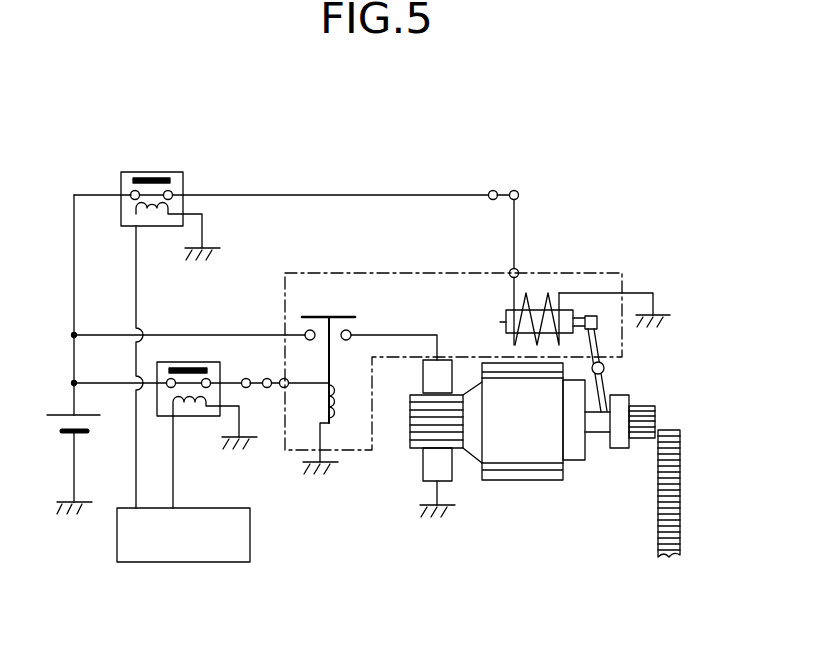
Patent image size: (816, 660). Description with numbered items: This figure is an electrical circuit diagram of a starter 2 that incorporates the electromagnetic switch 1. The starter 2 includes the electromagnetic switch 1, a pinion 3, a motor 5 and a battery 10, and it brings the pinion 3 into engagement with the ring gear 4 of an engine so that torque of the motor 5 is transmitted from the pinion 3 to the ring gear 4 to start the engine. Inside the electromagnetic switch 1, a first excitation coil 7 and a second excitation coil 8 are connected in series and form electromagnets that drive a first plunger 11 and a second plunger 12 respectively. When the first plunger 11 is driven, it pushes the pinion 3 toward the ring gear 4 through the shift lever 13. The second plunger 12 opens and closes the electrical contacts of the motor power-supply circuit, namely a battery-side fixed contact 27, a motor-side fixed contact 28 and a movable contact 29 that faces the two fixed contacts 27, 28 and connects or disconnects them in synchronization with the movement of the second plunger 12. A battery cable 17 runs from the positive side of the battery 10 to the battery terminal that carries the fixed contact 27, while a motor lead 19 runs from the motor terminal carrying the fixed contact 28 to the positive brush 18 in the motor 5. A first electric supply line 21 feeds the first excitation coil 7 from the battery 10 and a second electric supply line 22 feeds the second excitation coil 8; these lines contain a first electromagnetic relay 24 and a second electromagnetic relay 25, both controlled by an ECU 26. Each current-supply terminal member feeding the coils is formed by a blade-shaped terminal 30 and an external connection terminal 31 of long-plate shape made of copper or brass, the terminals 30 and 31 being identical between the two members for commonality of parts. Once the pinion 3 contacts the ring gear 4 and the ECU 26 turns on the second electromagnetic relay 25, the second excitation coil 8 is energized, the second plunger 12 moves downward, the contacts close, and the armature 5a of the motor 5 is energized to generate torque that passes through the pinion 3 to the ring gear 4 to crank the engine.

The electromagnetic switch 1 is at (462, 272).
The starter 2 is at (361, 150).
The pinion 3 is at (645, 405).
The ring gear 4 is at (680, 465).
The motor 5 is at (536, 451).
The armature 5a is at (507, 447).
The first excitation coil 7 is at (538, 310).
The second excitation coil 8 is at (336, 415).
The battery 10 is at (57, 432).
The first plunger 11 is at (506, 322).
The second plunger 12 is at (330, 362).
The shift lever 13 is at (605, 380).
The battery cable 17 is at (196, 335).
The positive brush 18 is at (437, 375).
The motor lead 19 is at (400, 335).
The first electric supply line 21 is at (255, 195).
The second electric supply line 22 is at (108, 383).
The first electromagnetic relay 24 is at (170, 172).
The second electromagnetic relay 25 is at (193, 418).
The ECU 26 is at (195, 562).
The battery-side fixed contact 27 is at (303, 331).
The motor-side fixed contact 28 is at (351, 333).
The movable contact 29 is at (327, 315).
The blade-shaped terminal 30 is at (267, 378).
The external connection terminal 31 is at (246, 378).